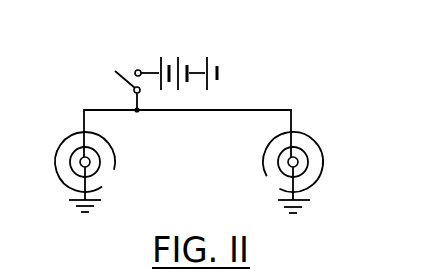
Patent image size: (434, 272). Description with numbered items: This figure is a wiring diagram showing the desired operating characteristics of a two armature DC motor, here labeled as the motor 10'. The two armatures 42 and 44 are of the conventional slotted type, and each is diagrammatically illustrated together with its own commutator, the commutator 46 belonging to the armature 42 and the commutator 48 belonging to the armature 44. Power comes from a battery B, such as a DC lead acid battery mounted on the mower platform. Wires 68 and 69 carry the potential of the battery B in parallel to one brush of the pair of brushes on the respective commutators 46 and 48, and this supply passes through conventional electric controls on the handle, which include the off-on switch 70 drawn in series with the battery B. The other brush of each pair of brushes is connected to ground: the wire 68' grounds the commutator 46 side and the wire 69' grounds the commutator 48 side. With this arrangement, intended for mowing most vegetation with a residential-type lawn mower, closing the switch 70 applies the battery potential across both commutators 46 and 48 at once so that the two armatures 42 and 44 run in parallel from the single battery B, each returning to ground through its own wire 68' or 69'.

The self-propelled mower motor 10' is at (295, 28).
The off-on switch 70 is at (115, 70).
The battery B is at (179, 57).
The wire 68 is at (217, 108).
The wire 69 is at (110, 122).
The armature 44 is at (115, 163).
The commutator 48 is at (98, 175).
The armature 42 is at (264, 142).
The commutator 46 is at (277, 178).
The wire 69' is at (60, 189).
The wire 68' is at (316, 190).